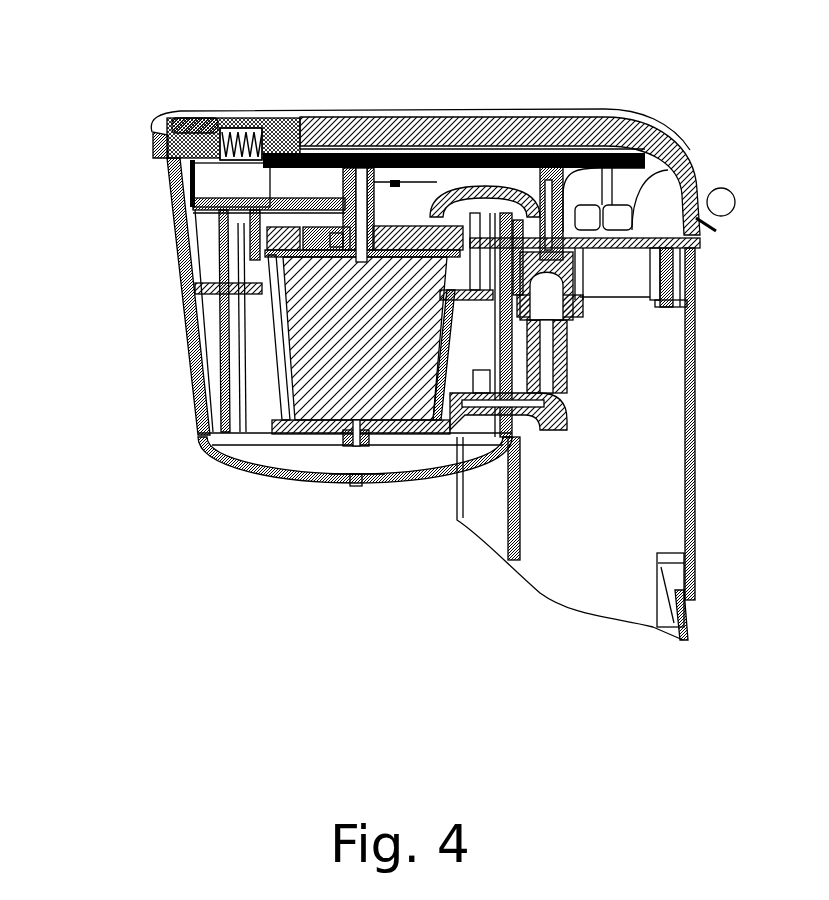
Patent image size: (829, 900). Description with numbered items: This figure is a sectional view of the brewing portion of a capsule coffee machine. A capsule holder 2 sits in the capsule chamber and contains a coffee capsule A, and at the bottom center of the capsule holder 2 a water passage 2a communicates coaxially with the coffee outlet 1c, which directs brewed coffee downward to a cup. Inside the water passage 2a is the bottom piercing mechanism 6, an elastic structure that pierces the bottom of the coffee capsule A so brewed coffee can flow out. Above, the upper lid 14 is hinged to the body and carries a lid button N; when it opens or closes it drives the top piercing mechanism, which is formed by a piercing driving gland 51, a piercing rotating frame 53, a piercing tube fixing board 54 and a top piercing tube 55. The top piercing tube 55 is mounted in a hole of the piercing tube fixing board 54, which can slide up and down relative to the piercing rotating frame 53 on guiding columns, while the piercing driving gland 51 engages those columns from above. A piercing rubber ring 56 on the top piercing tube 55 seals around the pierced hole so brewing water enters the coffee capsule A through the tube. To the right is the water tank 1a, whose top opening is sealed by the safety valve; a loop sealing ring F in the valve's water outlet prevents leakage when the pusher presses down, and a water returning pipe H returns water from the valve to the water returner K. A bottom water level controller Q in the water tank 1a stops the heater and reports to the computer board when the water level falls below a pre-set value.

The upper lid 14 is at (618, 118).
The piercing driving gland 51 is at (327, 135).
The lid button N is at (165, 128).
The capsule holder 2 is at (197, 447).
The piercing rotating frame 53 is at (198, 200).
The piercing rubber ring 56 is at (233, 267).
The water returner K is at (243, 380).
The coffee capsule A is at (320, 335).
The top piercing tube 55 is at (410, 182).
The piercing tube fixing board 54 is at (488, 160).
The water returning pipe H is at (565, 407).
The loop sealing ring F is at (580, 252).
The water tank 1a is at (603, 498).
The bottom water level controller Q is at (693, 587).
The bottom piercing mechanism 6 is at (357, 430).
The coffee outlet 1c is at (355, 483).
The water passage 2a is at (362, 452).